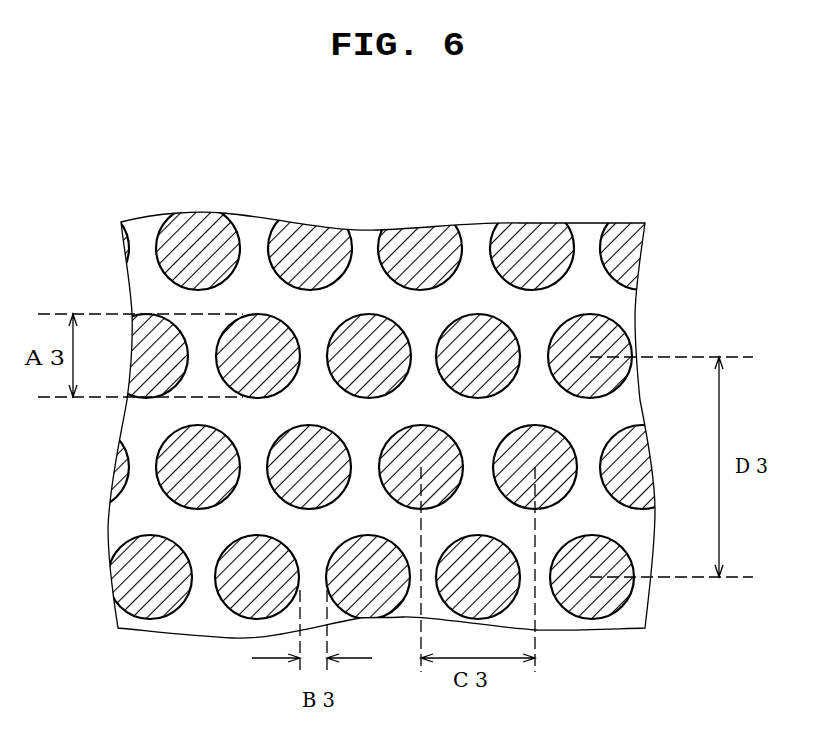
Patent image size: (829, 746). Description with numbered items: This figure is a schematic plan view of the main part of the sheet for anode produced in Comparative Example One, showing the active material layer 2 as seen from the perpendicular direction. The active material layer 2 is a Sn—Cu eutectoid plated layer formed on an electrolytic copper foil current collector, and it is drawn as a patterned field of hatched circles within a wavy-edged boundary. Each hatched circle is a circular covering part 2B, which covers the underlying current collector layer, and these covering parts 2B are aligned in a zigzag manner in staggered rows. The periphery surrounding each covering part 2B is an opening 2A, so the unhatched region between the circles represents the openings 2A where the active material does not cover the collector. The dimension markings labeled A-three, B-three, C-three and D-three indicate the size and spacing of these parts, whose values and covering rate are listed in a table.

The active material layer 2 is at (432, 153).
The opening 2A is at (317, 308).
The covering part 2B is at (390, 348).